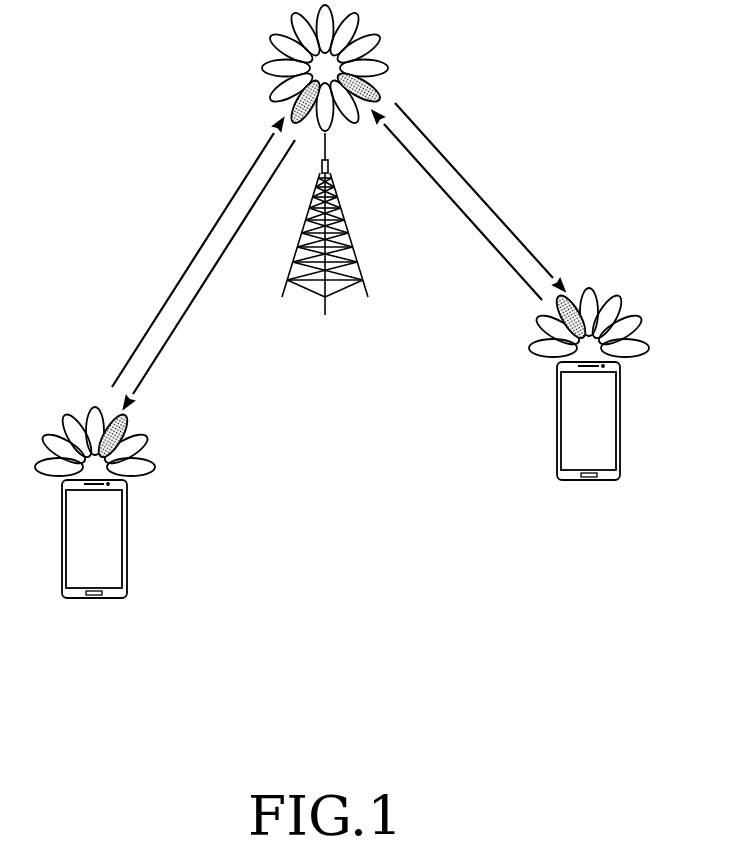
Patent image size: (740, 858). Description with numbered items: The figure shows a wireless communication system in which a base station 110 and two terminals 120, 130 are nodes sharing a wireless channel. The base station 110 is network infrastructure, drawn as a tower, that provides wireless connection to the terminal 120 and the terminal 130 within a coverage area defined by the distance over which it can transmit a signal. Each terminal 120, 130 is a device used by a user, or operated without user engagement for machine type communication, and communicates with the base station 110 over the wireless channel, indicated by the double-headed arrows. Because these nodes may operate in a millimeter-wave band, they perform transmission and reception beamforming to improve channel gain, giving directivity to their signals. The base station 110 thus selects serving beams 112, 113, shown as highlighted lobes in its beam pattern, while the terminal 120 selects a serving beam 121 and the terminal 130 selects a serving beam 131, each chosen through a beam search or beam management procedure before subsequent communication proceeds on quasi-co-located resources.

The base station 110 is at (343, 220).
The serving beam 112 is at (293, 117).
The serving beam 113 is at (378, 98).
The terminal 120 is at (128, 512).
The serving beam 121 is at (127, 421).
The terminal 130 is at (621, 393).
The serving beam 131 is at (560, 304).